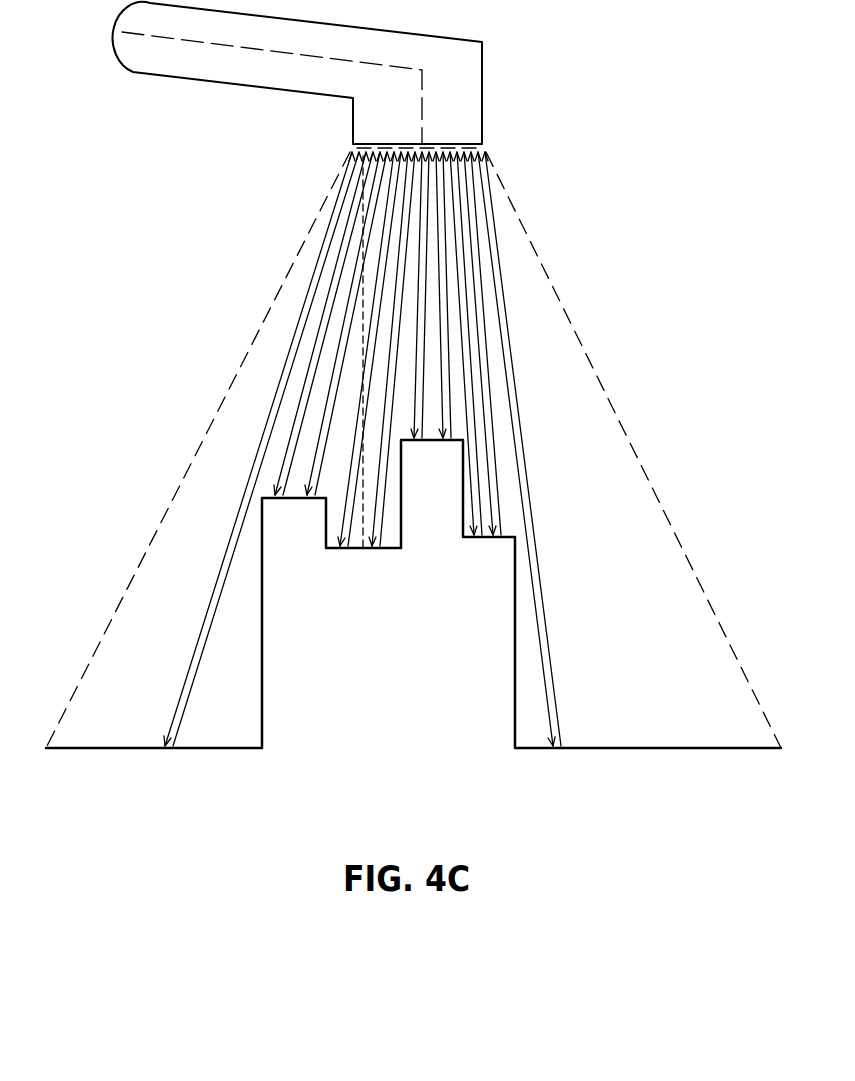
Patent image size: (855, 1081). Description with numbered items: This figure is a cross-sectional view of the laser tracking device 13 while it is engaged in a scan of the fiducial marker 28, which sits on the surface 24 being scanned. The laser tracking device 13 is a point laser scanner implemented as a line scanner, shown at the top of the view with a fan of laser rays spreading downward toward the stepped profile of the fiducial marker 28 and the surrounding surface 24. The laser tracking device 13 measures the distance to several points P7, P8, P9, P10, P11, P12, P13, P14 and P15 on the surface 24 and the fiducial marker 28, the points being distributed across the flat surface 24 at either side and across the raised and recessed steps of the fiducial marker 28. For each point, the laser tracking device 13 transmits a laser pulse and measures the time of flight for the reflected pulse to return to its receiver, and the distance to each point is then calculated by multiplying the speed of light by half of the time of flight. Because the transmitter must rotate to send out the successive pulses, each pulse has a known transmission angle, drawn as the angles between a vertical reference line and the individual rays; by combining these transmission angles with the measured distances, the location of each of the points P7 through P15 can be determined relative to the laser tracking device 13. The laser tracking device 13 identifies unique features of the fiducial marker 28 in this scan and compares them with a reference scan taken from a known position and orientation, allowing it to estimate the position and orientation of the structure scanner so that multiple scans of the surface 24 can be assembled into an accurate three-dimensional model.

The laser tracking device 13 is at (311, 104).
The surface 24 is at (713, 791).
The fiducial marker 28 is at (516, 650).
The point P7 is at (258, 464).
The point P8 is at (320, 339).
The point P9 is at (343, 339).
The point P10 is at (365, 367).
The point P11 is at (393, 367).
The point P12 is at (424, 311).
The point P13 is at (437, 324).
The point P14 is at (470, 359).
The point P15 is at (485, 372).